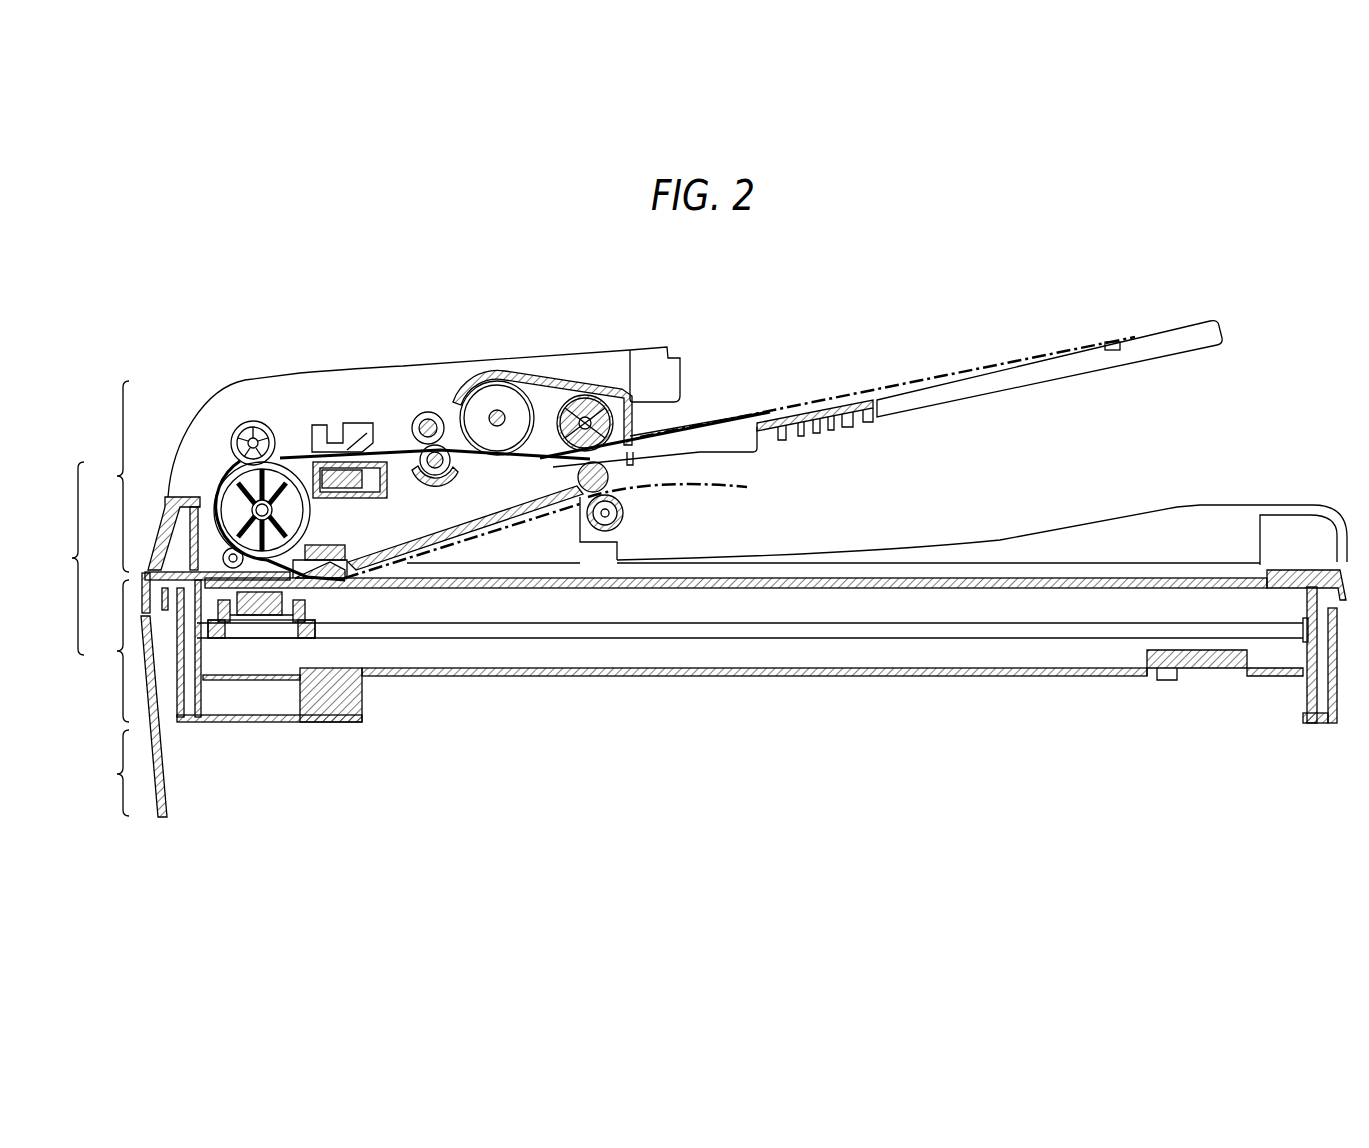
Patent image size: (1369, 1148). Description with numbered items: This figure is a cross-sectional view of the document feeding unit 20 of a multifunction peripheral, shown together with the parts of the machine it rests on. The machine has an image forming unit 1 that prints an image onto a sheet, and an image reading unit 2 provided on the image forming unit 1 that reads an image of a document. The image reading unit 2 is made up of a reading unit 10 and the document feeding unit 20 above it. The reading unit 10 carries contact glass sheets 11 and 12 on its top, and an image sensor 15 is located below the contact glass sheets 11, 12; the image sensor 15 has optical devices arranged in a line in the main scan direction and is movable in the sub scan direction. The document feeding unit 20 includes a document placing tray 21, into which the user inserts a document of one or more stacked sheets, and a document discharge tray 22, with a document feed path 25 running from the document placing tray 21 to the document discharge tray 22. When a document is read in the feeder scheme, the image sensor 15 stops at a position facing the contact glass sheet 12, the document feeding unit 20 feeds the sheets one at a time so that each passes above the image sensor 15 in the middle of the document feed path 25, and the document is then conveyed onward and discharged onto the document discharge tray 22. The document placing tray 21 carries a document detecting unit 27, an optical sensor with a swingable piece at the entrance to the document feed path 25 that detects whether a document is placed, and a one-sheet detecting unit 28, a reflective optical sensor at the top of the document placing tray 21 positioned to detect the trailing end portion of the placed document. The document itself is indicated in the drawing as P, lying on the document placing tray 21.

The image forming unit 1 is at (131, 716).
The image reading unit 2 is at (68, 558).
The reading unit 10 is at (714, 646).
The contact glass sheet 11 is at (637, 586).
The contact glass sheet 12 is at (337, 588).
The image sensor 15 is at (283, 612).
The document feeding unit 20 is at (381, 459).
The document placing tray 21 is at (1200, 332).
The document discharge tray 22 is at (1043, 535).
The document feed path 25 is at (398, 430).
The document detecting unit 27 is at (630, 436).
The one-sheet detecting unit 28 is at (1113, 352).
The document sheet P is at (908, 380).